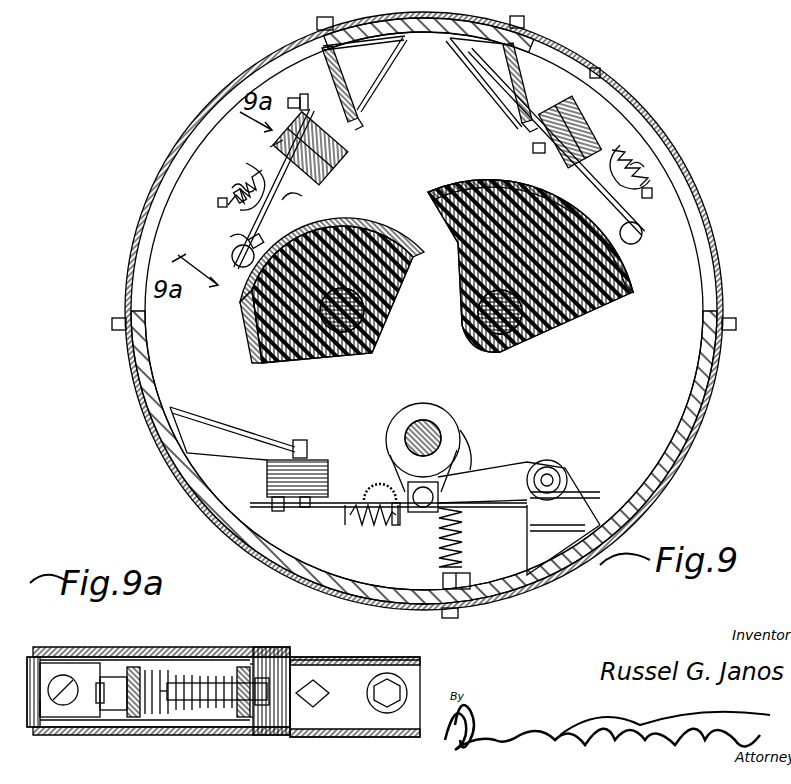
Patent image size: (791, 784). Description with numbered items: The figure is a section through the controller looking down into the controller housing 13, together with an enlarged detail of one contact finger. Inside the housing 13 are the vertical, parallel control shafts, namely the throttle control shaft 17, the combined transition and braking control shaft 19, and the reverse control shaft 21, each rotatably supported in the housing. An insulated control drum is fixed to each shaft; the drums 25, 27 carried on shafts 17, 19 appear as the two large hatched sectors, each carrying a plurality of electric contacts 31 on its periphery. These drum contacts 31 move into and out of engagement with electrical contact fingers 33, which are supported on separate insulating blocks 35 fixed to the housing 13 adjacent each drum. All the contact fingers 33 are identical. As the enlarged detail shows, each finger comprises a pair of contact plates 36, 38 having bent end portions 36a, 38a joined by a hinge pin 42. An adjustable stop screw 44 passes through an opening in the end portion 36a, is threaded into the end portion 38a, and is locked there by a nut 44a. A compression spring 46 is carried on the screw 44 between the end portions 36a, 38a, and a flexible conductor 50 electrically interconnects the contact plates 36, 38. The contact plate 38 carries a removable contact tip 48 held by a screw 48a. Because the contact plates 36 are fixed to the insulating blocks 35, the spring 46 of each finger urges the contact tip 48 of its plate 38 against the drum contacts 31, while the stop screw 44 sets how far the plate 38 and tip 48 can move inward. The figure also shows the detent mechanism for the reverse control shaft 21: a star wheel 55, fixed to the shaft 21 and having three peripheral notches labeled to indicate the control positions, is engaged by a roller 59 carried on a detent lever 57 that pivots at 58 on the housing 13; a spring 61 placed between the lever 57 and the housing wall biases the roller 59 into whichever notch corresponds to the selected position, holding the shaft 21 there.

In FIG. 9, the controller housing 13 is at (710, 373).
In FIG. 9, the throttle control shaft 17 is at (517, 350).
In FIG. 9, the combined transition and braking control shaft 19 is at (388, 313).
In FIG. 9, the reverse control shaft 21 is at (430, 423).
In FIG. 9, the insulated control drum 25 is at (590, 313).
In FIG. 9, the insulated control drum 27 is at (297, 360).
In FIG. 9A, the insulated control drum 27 is at (263, 717).
In FIG. 9, the electric contacts 31 is at (243, 347).
In FIG. 9A, the electric contacts 31 is at (103, 717).
In FIG. 9, the electrical contact fingers 33 is at (310, 120).
In FIG. 9, the insulating block 35 is at (343, 140).
In FIG. 9A, the insulating block 35 is at (360, 735).
In FIG. 9, the contact plate 36 is at (300, 115).
In FIG. 9A, the contact plate 36 is at (340, 680).
In FIG. 9, the bent end portion 36a is at (270, 147).
In FIG. 9A, the bent end portion 36a is at (247, 687).
In FIG. 9, the contact plate 38 is at (267, 217).
In FIG. 9A, the contact plate 38 is at (77, 673).
In FIG. 9, the bent end portion 38a is at (233, 200).
In FIG. 9A, the bent end portion 38a is at (133, 670).
In FIG. 9, the hinge pin 42 is at (253, 180).
In FIG. 9A, the hinge pin 42 is at (203, 660).
In FIG. 9, the adjustable stop screw 44 is at (247, 160).
In FIG. 9A, the adjustable stop screw 44 is at (227, 688).
In FIG. 9, the nut 44a is at (220, 205).
In FIG. 9A, the nut 44a is at (113, 677).
In FIG. 9, the compression spring 46 is at (240, 178).
In FIG. 9A, the compression spring 46 is at (230, 703).
In FIG. 9, the removable contact tip 48 is at (233, 267).
In FIG. 9A, the removable contact tip 48 is at (43, 717).
In FIG. 9, the screw 48a is at (230, 237).
In FIG. 9A, the screw 48a is at (57, 685).
In FIG. 9, the flexible conductor 50 is at (297, 193).
In FIG. 9, the star wheel 55 is at (463, 460).
In FIG. 9, the detent lever 57 is at (477, 497).
In FIG. 9, the pivot 58 is at (550, 473).
In FIG. 9, the roller 59 is at (423, 512).
In FIG. 9, the spring 61 is at (467, 553).